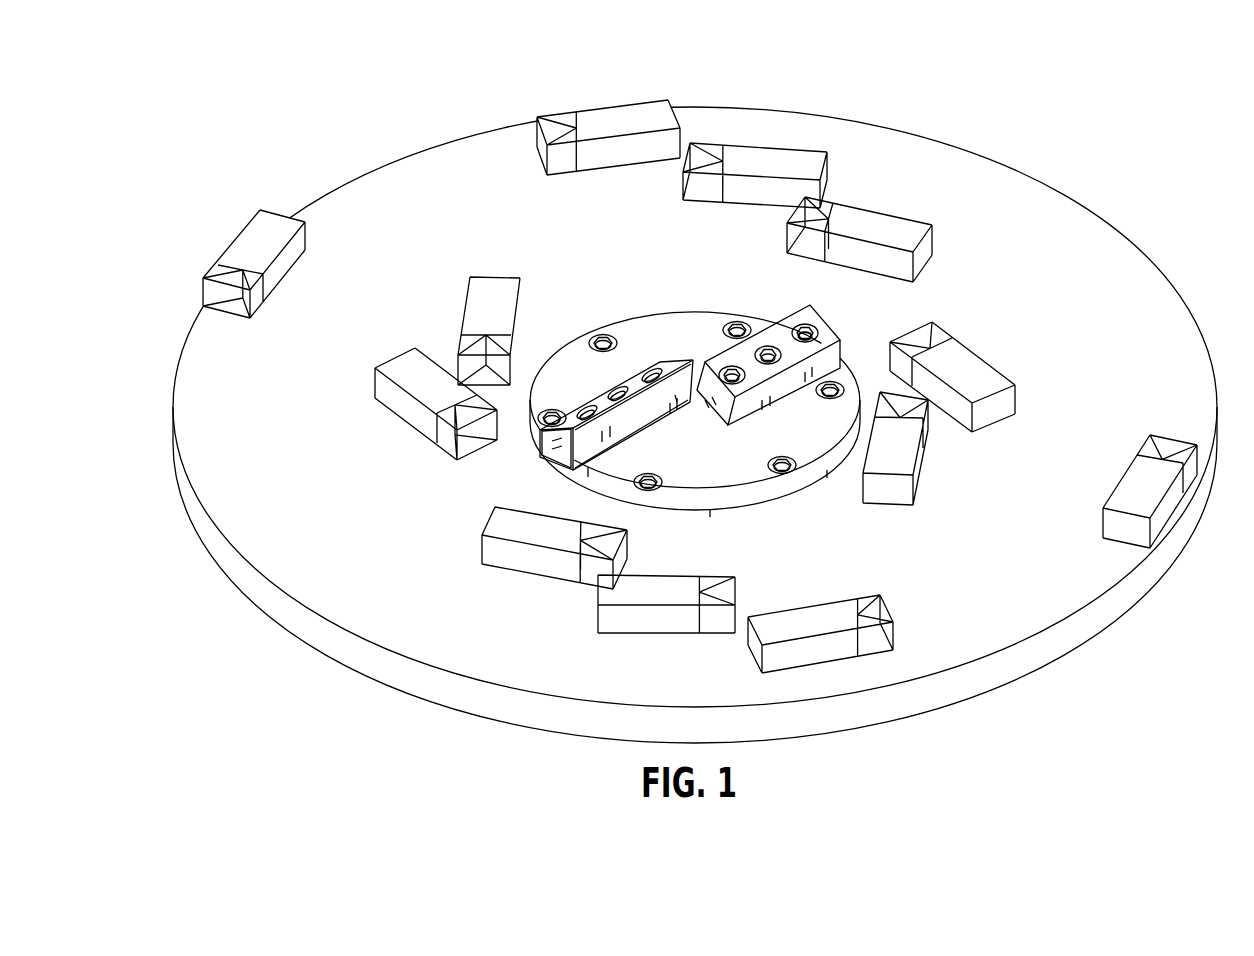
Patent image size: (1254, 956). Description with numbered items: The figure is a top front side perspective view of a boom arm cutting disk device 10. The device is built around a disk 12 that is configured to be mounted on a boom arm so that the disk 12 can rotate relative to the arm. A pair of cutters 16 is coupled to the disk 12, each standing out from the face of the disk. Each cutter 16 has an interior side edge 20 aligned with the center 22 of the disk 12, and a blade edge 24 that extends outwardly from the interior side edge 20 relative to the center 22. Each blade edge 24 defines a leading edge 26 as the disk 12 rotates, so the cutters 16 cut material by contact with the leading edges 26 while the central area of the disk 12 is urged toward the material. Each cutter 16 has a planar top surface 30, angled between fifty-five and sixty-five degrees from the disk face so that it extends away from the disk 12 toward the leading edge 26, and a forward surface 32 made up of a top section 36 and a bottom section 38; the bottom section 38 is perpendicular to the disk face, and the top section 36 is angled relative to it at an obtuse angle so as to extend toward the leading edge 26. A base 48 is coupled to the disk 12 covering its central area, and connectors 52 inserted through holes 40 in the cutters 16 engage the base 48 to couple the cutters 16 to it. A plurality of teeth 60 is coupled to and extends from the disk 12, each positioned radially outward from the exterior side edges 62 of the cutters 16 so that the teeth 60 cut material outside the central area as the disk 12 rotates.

The boom arm cutting disk device 10 is at (1105, 148).
The disk 12 is at (1122, 262).
The cutter 16 is at (698, 396).
The interior side edge 20 is at (695, 399).
The center 22 is at (674, 363).
The blade edge 24 is at (785, 318).
The leading edge 26 is at (711, 325).
The top surface 30 is at (669, 396).
The forward surface 32 is at (699, 412).
The top section 36 is at (666, 414).
The bottom section 38 is at (600, 428).
The hole 40 is at (795, 306).
The base 48 is at (816, 451).
The connector 52 is at (806, 330).
The teeth 60 is at (798, 160).
The exterior side edge 62 is at (826, 336).